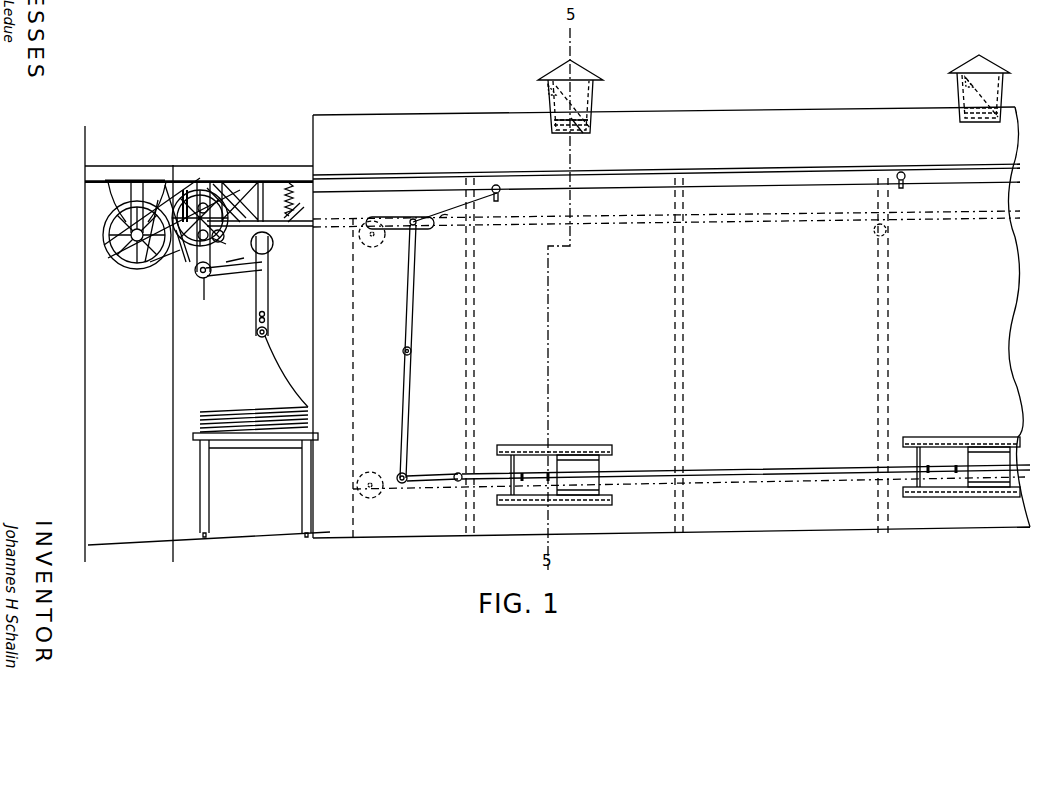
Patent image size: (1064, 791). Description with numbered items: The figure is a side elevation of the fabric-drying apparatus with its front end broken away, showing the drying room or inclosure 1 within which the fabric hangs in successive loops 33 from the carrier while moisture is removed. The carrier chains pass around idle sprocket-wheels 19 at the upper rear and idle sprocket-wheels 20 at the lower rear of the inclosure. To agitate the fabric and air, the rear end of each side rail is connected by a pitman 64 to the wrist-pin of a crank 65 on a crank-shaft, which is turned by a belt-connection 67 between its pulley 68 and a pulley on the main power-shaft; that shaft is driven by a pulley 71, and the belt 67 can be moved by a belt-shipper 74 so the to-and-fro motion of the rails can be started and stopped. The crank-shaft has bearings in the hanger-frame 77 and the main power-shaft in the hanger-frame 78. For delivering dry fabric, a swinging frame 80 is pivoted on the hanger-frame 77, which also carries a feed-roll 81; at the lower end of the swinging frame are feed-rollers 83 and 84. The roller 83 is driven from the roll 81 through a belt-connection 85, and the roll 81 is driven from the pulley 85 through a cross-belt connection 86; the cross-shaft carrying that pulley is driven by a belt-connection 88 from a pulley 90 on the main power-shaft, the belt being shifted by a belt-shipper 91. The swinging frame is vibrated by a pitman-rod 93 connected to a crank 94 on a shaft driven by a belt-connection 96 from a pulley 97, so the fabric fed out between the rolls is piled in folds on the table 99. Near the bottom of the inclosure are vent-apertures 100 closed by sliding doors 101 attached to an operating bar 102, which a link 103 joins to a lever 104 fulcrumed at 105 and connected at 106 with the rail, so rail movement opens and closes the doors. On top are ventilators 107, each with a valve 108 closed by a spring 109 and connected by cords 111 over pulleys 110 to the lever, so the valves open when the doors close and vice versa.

The drying room or inclosure 1 is at (1005, 298).
The sprocket-wheels 19 is at (381, 240).
The sprocket-wheels 20 is at (365, 492).
The loops 33 is at (226, 413).
The pitman 64 is at (302, 225).
The crank 65 is at (203, 178).
The belt-connection 67 is at (188, 255).
The pulley 68 is at (218, 241).
The pulley 71 is at (170, 405).
The belt-shipper 74 is at (135, 186).
The hanger-frame 77 is at (225, 184).
The hanger-frame 78 is at (122, 197).
The swinging frame 80 is at (270, 299).
The feed-roll 81 is at (287, 228).
The feed-roller 83 is at (270, 334).
The feed-roller 84 is at (267, 317).
The belt-connection and pulley 85 is at (270, 283).
The cross-belt connection 86 is at (262, 190).
The belt-connection 88 is at (190, 195).
The pulley 90 is at (118, 232).
The belt-shipper 91 is at (168, 195).
The pitman-rod 93 is at (232, 279).
The crank 94 is at (208, 279).
The belt-connection 96 is at (178, 266).
The pulley 97 is at (218, 266).
The table 99 is at (265, 436).
The vent-apertures 100 is at (590, 466).
The sliding doors 101 is at (532, 460).
The operating bar 102 is at (768, 458).
The link 103 is at (424, 476).
The lever 104 is at (403, 384).
The fulcrum 105 is at (402, 351).
The connection 106 is at (412, 218).
The ventilators 107 is at (594, 94).
The valve 108 is at (592, 116).
The spring 109 is at (580, 130).
The pulleys 110 is at (530, 184).
The cords 111 is at (548, 96).